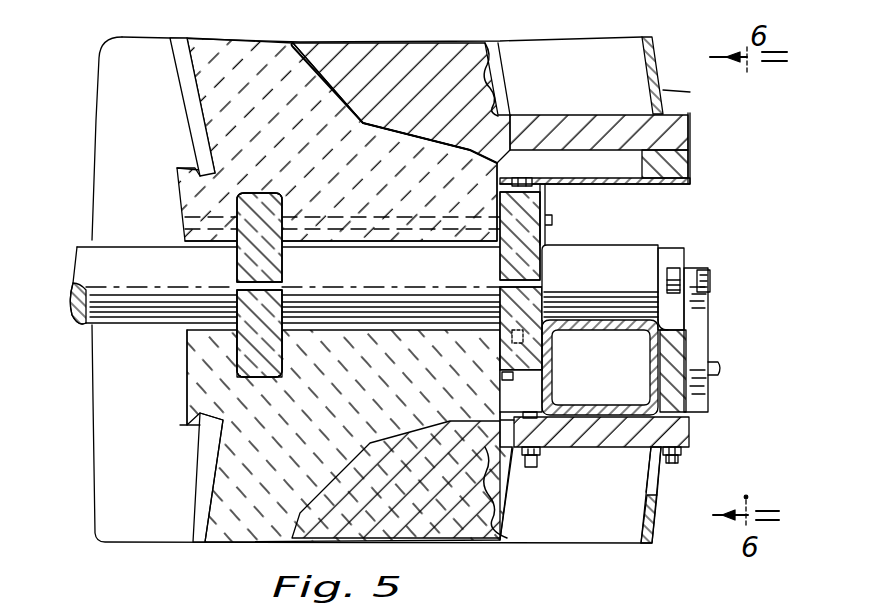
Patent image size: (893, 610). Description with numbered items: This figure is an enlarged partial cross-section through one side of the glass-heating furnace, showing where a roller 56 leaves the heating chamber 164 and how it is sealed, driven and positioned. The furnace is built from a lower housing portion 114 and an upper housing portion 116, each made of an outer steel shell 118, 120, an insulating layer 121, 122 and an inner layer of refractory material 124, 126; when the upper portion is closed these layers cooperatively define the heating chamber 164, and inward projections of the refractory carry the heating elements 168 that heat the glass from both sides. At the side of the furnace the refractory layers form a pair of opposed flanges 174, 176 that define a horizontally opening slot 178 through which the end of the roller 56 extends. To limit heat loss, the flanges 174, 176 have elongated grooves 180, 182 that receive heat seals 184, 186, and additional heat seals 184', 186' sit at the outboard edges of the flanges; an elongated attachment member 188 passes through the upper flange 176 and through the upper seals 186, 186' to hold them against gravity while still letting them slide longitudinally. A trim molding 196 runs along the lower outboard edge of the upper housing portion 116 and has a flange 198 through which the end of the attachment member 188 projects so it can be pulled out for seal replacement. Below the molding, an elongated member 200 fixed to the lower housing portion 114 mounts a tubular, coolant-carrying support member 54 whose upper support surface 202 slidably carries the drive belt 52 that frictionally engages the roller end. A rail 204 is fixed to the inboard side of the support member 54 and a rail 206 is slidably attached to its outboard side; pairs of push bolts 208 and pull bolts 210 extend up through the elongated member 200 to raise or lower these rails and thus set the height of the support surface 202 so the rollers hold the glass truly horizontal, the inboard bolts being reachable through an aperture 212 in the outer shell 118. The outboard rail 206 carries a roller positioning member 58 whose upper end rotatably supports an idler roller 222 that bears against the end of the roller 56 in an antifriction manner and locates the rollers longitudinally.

The drive belts 52 is at (595, 318).
The support members 54 is at (661, 364).
The rollers 56 is at (124, 264).
The roller positioning members 58 is at (707, 298).
The lower housing portion 114 is at (663, 497).
The upper housing portion 116 is at (663, 90).
The outer steel shell 118 is at (652, 515).
The outer steel shell 120 is at (657, 73).
The insulating layer 121 is at (447, 508).
The insulating layer 122 is at (400, 58).
The inner layer of refractory material 124 is at (250, 513).
The inner layer of refractory material 126 is at (237, 83).
The heating chamber 164 is at (125, 360).
The heating elements 168 is at (193, 113).
The flange 174 is at (417, 413).
The flange 176 is at (413, 160).
The slots 178 is at (341, 202).
The groove 180 is at (268, 371).
The groove 182 is at (262, 195).
The heat seal 184 is at (300, 333).
The heat seal 186 is at (297, 237).
The heat seal 184' is at (486, 329).
The heat seal 186' is at (568, 236).
The attachment member 188 is at (342, 214).
The trim molding 196 is at (690, 140).
The flange 198 is at (547, 193).
The elongated members 200 is at (597, 430).
The support surfaces 202 is at (627, 325).
The rail 204 is at (518, 382).
The rail 206 is at (673, 383).
The push bolts 208 is at (530, 468).
The pull bolts 210 is at (540, 466).
The apertures 212 is at (641, 492).
The idler rollers 222 is at (673, 268).